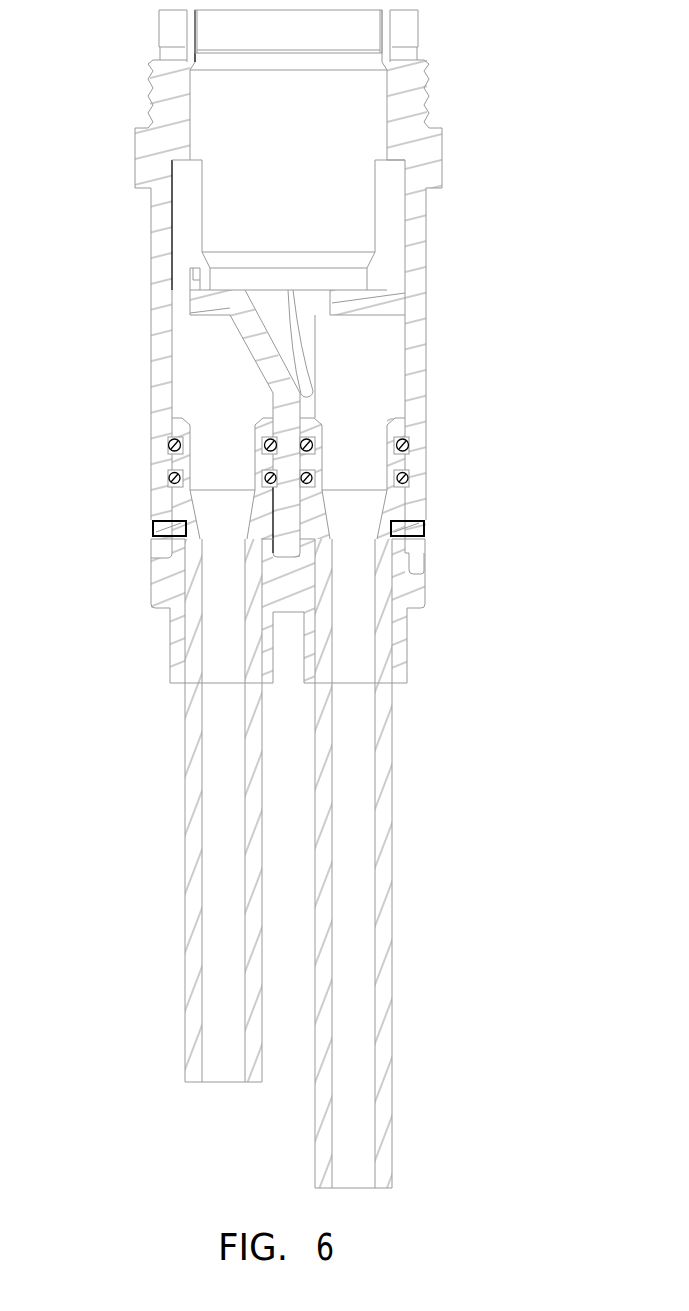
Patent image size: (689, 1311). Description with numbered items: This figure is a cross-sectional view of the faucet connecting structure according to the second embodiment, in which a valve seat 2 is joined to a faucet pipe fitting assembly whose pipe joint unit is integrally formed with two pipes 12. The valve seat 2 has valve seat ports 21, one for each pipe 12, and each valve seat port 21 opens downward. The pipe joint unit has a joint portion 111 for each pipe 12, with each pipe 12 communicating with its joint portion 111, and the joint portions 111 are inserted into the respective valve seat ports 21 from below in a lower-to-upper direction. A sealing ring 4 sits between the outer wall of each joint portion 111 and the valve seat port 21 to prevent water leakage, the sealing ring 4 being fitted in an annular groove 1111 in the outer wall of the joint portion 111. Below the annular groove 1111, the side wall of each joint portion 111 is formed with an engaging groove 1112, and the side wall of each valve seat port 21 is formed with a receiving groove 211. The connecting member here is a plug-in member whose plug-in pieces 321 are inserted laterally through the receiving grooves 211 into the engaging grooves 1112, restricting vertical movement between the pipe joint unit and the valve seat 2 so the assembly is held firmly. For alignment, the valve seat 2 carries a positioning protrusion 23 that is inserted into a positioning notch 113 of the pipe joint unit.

The valve seat 2 is at (403, 247).
The valve seat port 21 is at (214, 390).
The joint portion 111 is at (408, 418).
The annular groove 1111 is at (172, 438).
The engaging groove 1112 is at (174, 484).
The sealing ring 4 is at (173, 445).
The receiving groove 211 is at (175, 520).
The plug-in piece 321 is at (165, 532).
The positioning protrusion 23 is at (420, 562).
The positioning notch 113 is at (420, 580).
The pipe 12 is at (195, 740).